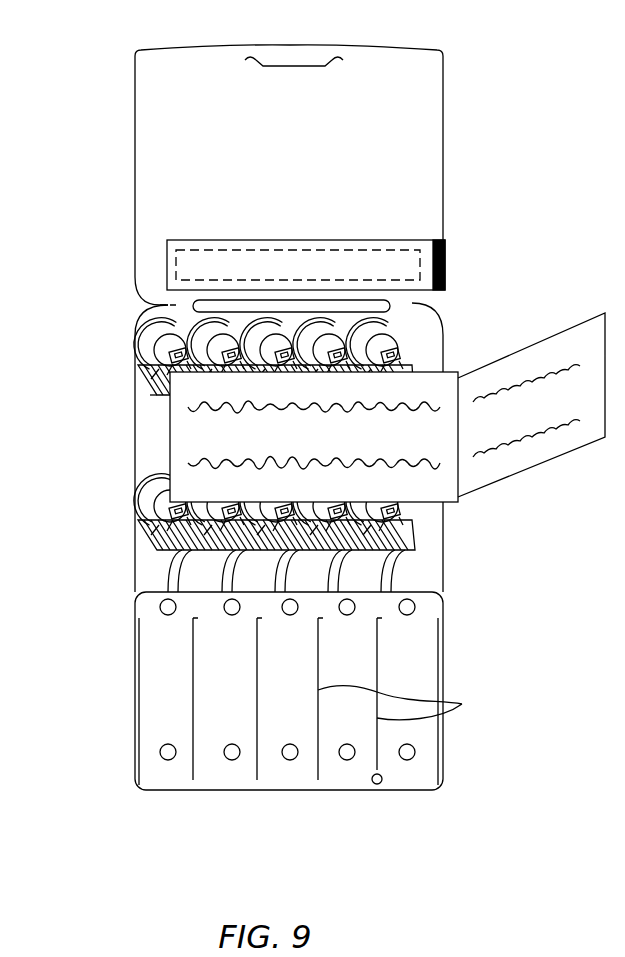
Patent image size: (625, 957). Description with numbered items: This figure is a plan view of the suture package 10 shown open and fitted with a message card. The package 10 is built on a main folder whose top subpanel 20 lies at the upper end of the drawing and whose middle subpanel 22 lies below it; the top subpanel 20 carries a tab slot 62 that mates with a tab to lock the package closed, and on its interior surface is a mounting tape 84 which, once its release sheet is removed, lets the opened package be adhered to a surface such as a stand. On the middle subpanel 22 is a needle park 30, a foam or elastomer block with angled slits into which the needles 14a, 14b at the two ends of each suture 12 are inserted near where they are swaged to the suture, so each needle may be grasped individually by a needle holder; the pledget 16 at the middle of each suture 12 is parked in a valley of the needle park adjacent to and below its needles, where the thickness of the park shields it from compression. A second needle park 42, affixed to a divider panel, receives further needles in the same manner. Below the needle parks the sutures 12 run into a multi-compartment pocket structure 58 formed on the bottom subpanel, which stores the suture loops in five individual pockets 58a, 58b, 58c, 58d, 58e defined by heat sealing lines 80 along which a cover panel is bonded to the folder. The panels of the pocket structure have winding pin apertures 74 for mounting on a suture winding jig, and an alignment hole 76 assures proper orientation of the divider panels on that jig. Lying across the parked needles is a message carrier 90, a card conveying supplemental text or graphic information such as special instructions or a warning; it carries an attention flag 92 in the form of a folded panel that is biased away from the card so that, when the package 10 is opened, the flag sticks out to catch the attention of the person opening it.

The suture package 10 is at (84, 442).
The sutures 12 is at (168, 585).
The needle 14a is at (152, 330).
The needle 14b is at (152, 348).
The pledget 16 is at (150, 384).
The top subpanel 20 is at (332, 160).
The middle subpanel 22 is at (152, 458).
The needle park 30 is at (150, 397).
The second needle park 42 is at (140, 537).
The pocket structure 58 is at (292, 724).
The pocket 58a is at (151, 721).
The pocket 58b is at (207, 780).
The pocket 58c is at (277, 780).
The pocket 58d is at (333, 780).
The pocket 58e is at (415, 715).
The tab slot 62 is at (288, 64).
The winding pin apertures 74 is at (160, 752).
The alignment hole 76 is at (377, 785).
The sealing lines 80 is at (462, 704).
The mounting tape 84 is at (405, 288).
The message carrier 90 is at (418, 490).
The attention flag 92 is at (590, 330).